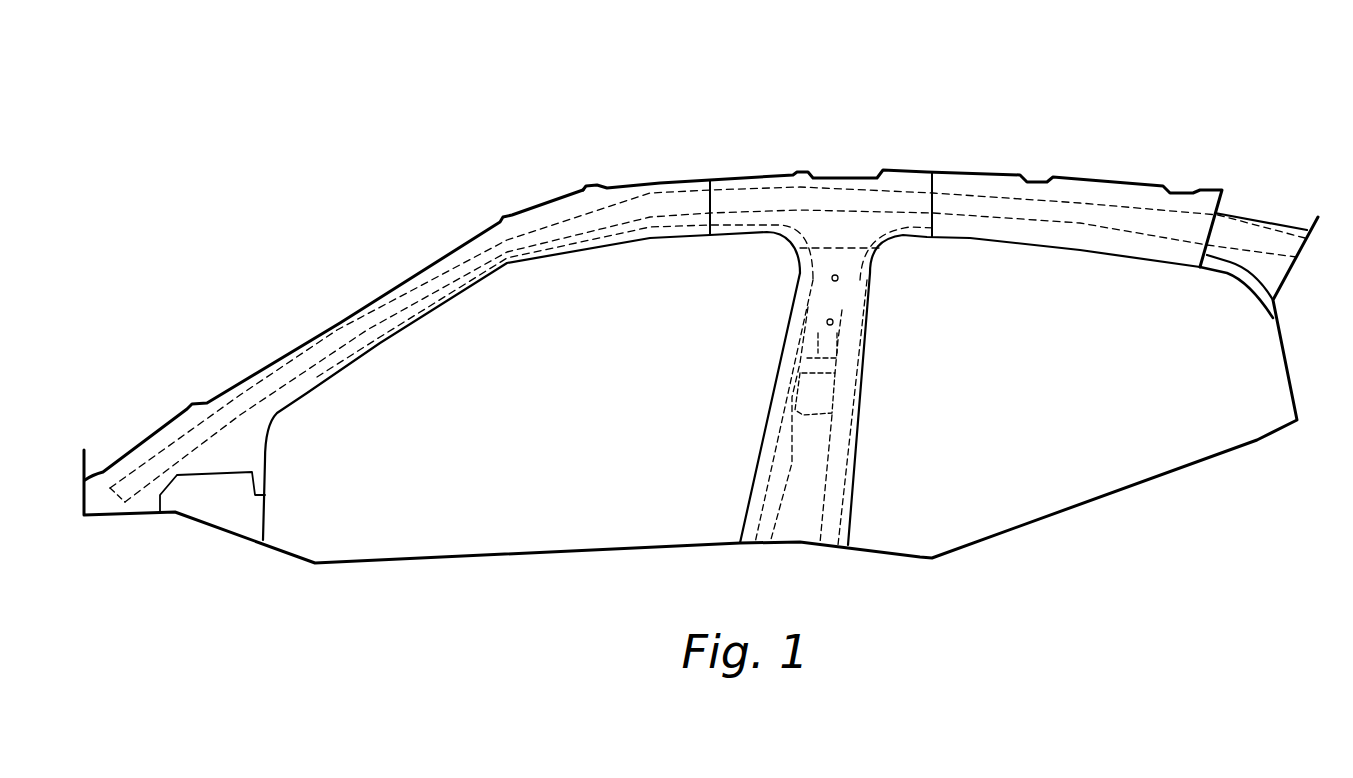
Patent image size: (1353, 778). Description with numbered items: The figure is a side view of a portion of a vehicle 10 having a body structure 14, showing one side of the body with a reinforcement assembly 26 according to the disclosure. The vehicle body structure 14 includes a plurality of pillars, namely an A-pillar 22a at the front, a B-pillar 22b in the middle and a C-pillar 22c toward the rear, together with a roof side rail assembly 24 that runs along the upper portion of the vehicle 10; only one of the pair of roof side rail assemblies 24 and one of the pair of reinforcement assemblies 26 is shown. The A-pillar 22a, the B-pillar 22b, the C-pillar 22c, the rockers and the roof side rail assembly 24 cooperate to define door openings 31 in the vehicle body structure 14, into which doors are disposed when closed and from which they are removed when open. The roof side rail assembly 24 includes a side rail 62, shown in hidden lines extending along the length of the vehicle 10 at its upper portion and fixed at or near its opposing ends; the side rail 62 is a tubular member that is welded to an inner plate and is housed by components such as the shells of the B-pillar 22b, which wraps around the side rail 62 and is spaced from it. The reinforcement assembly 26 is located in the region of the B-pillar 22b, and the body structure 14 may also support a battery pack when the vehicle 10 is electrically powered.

The vehicle 10 is at (427, 145).
The vehicle body structure 14 is at (543, 157).
The A-pillar 22a is at (347, 312).
The B-pillar 22b is at (813, 437).
The C-pillar 22c is at (1268, 273).
The roof side rail assembly 24 is at (910, 163).
The reinforcement assembly 26 is at (827, 280).
The door opening 31 is at (533, 478).
The side rail 62 is at (783, 192).